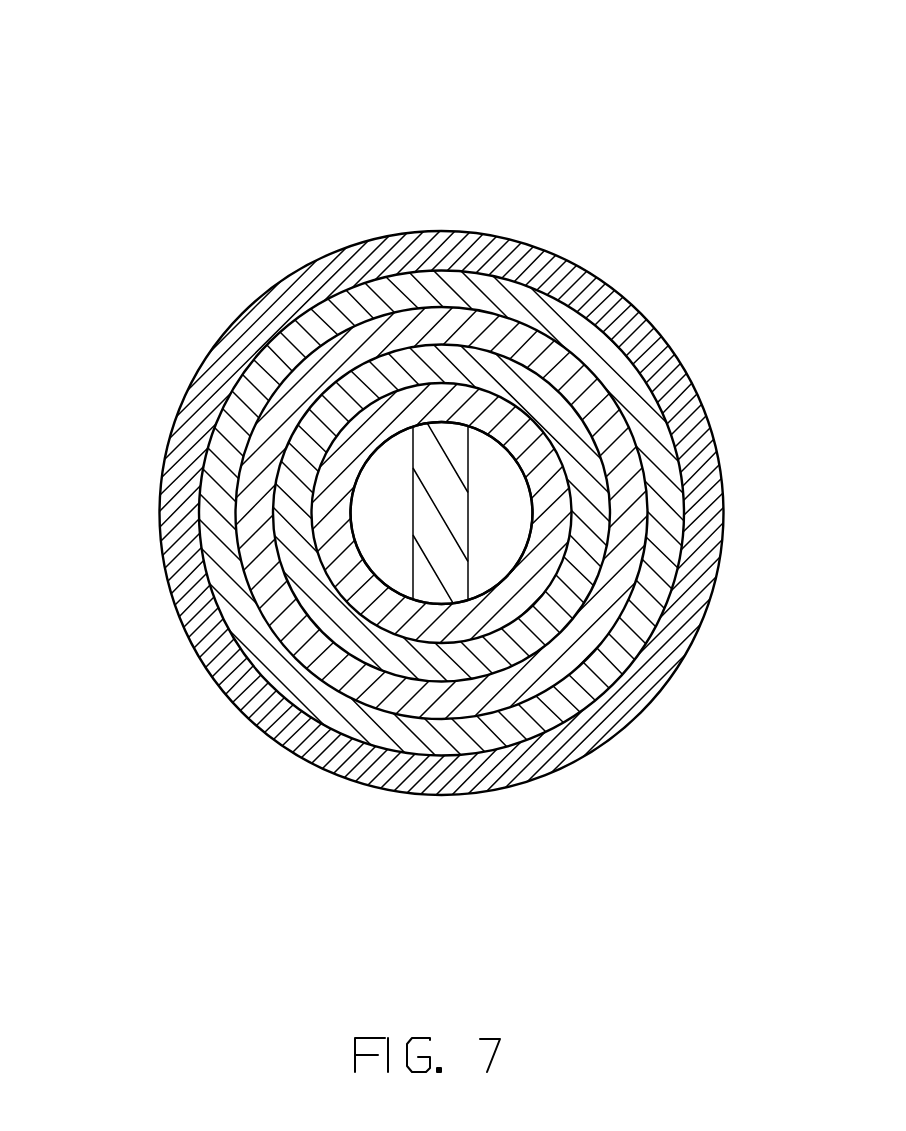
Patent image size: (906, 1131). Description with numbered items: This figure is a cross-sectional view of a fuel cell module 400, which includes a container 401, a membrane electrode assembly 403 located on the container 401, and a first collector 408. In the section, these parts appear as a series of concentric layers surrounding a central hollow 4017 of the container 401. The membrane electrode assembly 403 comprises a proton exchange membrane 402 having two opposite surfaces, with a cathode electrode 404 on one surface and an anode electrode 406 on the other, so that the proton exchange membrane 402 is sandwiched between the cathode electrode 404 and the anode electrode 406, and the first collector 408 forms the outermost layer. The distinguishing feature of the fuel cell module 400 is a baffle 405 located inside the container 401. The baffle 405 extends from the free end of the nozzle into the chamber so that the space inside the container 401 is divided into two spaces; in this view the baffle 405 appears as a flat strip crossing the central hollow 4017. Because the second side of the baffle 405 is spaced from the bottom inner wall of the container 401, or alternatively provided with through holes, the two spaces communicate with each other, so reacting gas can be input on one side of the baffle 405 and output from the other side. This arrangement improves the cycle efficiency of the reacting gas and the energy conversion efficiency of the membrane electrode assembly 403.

The fuel cell module 400 is at (370, 53).
The container 401 is at (390, 617).
The proton exchange membrane 402 is at (252, 482).
The membrane electrode assembly 403 is at (96, 392).
The cathode electrode 404 is at (287, 538).
The baffle 405 is at (453, 503).
The anode electrode 406 is at (243, 408).
The first collector 408 is at (238, 342).
The inner hollow 4017 is at (497, 465).